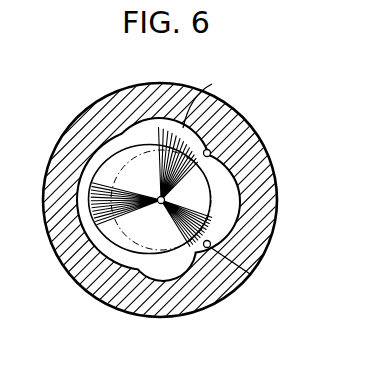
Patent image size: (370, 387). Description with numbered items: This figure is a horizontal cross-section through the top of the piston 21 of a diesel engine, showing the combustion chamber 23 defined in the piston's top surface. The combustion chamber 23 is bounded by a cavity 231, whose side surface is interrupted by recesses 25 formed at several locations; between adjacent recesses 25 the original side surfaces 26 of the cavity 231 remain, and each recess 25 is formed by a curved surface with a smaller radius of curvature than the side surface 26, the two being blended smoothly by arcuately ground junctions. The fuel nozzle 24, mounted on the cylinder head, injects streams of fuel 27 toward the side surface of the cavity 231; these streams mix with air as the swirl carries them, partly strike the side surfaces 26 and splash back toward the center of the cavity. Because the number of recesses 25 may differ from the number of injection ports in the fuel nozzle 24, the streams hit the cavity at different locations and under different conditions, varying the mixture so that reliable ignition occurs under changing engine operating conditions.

The piston 21 is at (251, 127).
The combustion chamber 23 is at (206, 202).
The cavity 231 is at (210, 155).
The fuel nozzle 24 is at (159, 198).
The recesses 25 is at (148, 121).
The side surfaces 26 is at (250, 274).
The streams of fuel 27 is at (213, 94).